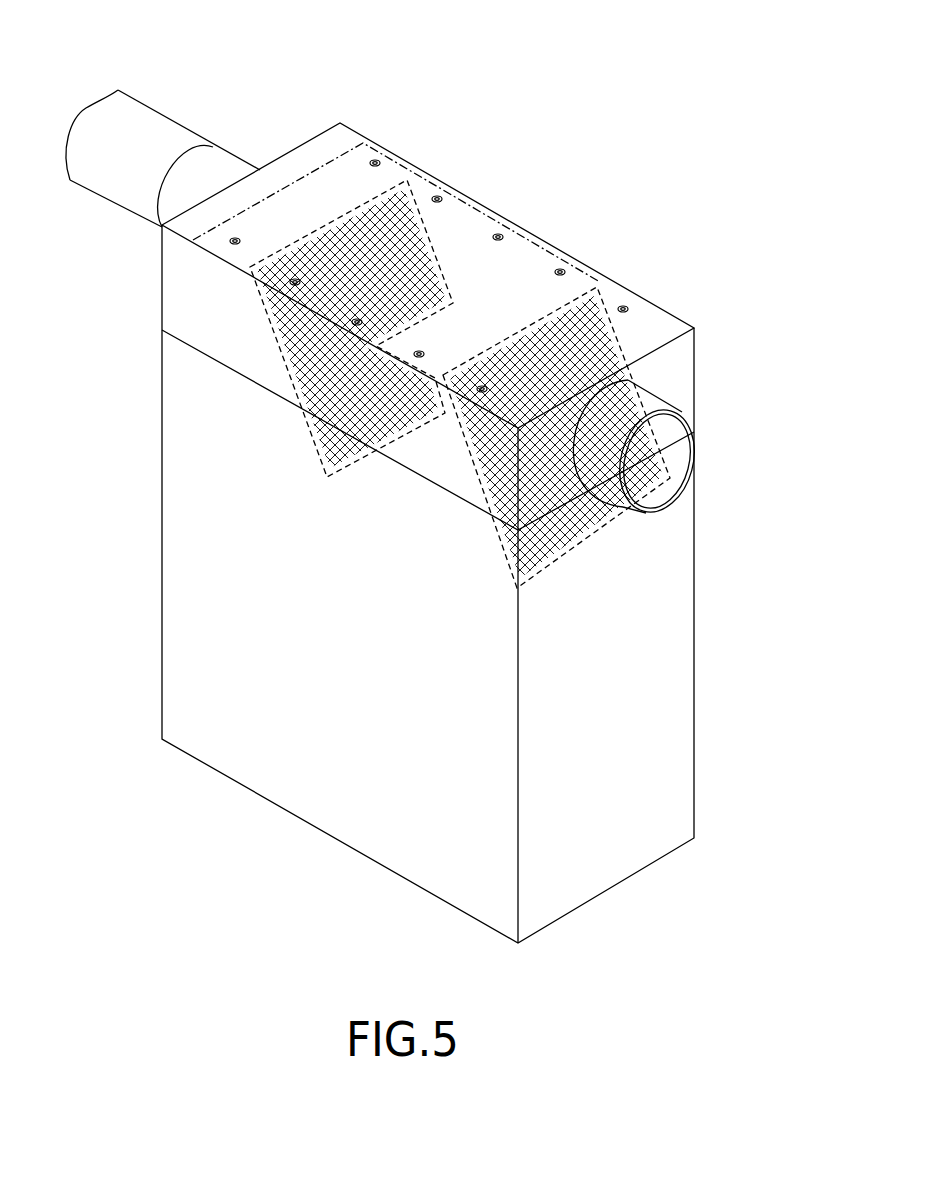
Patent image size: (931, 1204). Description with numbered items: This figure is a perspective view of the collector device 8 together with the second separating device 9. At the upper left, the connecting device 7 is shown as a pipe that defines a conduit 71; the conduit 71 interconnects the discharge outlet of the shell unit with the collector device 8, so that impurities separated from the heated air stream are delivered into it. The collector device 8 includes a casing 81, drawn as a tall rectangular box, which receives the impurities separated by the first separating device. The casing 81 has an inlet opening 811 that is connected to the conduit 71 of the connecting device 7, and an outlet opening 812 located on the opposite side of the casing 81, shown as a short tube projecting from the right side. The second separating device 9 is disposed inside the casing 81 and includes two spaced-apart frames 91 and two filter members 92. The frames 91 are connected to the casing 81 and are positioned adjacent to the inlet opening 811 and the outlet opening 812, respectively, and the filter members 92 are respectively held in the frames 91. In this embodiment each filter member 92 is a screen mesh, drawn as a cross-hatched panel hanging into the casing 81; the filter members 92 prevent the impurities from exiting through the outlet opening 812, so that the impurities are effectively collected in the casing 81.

The connecting device 7 is at (142, 100).
The conduit 71 is at (137, 140).
The collector device 8 is at (152, 408).
The casing 81 is at (162, 498).
The inlet opening 811 is at (223, 177).
The outlet opening 812 is at (678, 435).
The second separating device 9 is at (441, 336).
The frames 91 is at (441, 188).
The filter members 92 is at (437, 232).